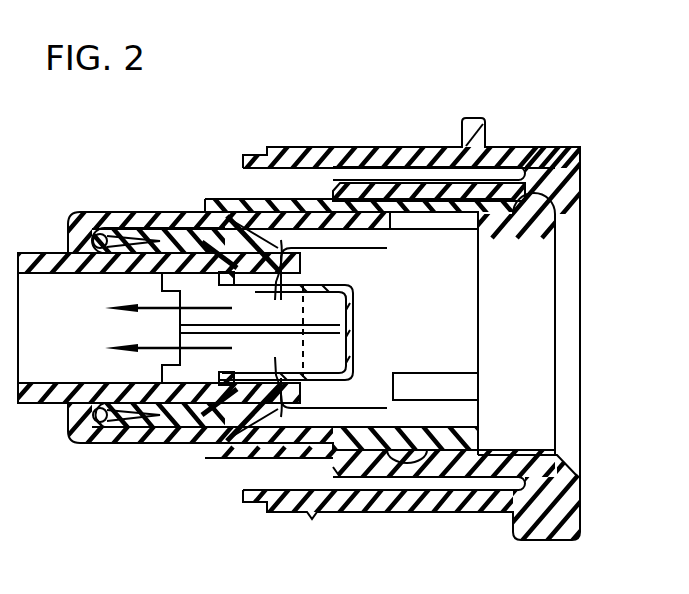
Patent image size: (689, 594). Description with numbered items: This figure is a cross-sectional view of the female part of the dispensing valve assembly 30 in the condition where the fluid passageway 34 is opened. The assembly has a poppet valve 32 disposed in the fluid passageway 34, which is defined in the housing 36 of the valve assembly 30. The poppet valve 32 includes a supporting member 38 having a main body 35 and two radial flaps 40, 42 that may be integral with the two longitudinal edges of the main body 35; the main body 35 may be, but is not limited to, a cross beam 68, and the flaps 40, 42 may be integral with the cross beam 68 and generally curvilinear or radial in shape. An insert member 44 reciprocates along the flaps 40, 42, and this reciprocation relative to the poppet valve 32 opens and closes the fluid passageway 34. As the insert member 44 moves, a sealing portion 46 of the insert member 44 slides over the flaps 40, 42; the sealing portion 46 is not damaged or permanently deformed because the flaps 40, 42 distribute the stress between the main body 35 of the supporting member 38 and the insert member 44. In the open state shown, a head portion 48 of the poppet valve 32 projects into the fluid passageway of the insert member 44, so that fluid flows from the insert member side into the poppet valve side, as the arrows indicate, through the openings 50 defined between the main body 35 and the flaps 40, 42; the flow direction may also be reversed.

The dispensing valve assembly 30 is at (550, 140).
The poppet valve 32 is at (157, 225).
The fluid passageway 34 is at (397, 240).
The main body 35 is at (312, 323).
The housing 36 is at (575, 176).
The supporting member 38 is at (364, 288).
The radial flap 40 is at (278, 292).
The radial flap 42 is at (255, 462).
The insert member 44 is at (458, 442).
The sealing portion 46 is at (222, 453).
The head portion 48 is at (348, 372).
The openings 50 is at (212, 220).
The cross beam 68 is at (337, 330).